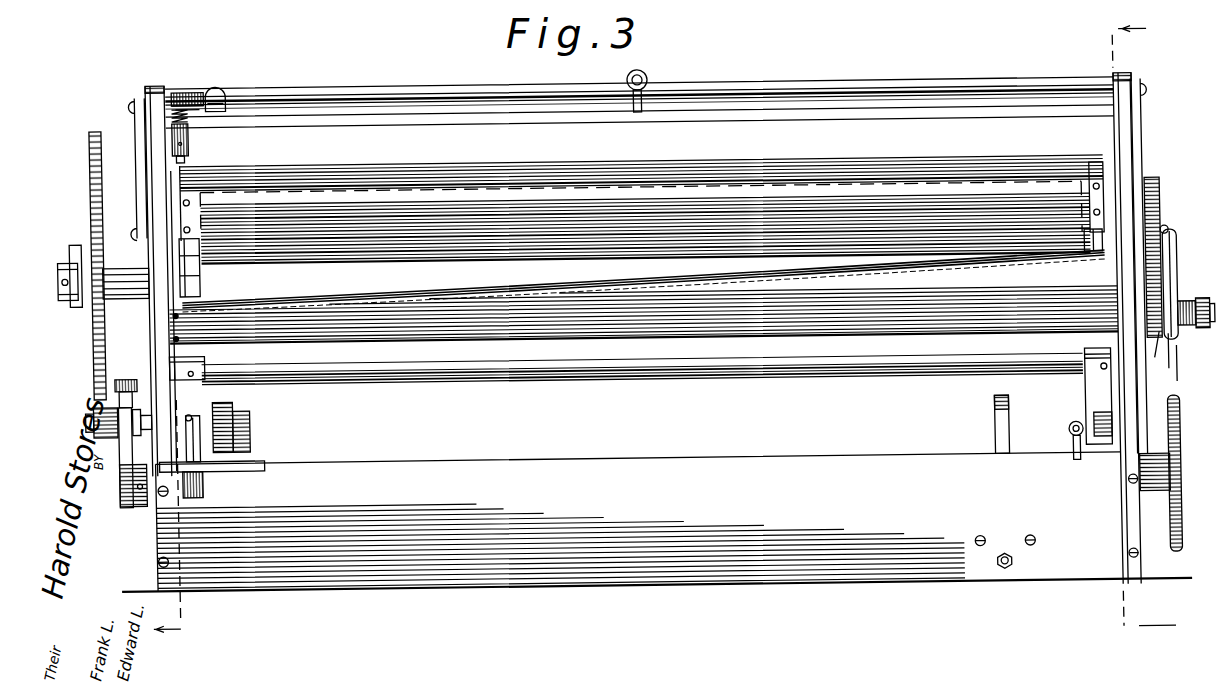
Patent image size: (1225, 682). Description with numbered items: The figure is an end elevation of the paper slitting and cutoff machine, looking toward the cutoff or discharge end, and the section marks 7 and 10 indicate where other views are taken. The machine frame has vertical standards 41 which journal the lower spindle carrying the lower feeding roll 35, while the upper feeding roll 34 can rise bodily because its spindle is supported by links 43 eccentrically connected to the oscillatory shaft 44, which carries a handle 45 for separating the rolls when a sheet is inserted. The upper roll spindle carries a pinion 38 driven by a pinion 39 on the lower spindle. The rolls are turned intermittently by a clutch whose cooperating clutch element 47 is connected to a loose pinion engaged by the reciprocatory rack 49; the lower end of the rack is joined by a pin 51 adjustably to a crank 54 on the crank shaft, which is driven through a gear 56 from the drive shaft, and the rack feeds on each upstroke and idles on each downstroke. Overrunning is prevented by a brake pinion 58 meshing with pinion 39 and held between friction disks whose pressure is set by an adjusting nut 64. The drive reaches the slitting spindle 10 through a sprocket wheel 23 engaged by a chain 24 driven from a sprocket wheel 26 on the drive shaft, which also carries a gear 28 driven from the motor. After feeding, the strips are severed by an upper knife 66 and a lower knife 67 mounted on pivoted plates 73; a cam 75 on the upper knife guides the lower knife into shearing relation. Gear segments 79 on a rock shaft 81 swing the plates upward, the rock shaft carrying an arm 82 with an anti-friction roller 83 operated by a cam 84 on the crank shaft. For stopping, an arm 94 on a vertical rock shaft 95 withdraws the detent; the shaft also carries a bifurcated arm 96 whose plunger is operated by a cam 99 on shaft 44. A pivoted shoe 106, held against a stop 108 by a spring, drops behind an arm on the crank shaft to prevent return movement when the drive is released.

The section line 7- 7 is at (1137, 331).
The spindle 10 is at (198, 397).
The sprocket wheel 23 is at (1179, 266).
The chain 24 is at (1178, 374).
The sprocket wheel 26 is at (1179, 448).
The gear 28 is at (250, 434).
The feeding roll 34 is at (305, 188).
The lower feeding roll 35 is at (645, 236).
The pinion 38 is at (1162, 197).
The pinion 39 is at (1167, 234).
The vertical standards 41 is at (158, 323).
The links 43 is at (144, 121).
The oscillatory shaft 44 is at (783, 92).
The handle 45 is at (653, 80).
The clutch element 47 is at (80, 238).
The reciprocatory rack 49 is at (95, 160).
The pin 51 is at (99, 403).
The crank 54 is at (118, 445).
The gear 56 is at (235, 401).
The pinion 58 is at (1155, 366).
The adjusting nut 64 is at (1191, 305).
The upper knife 66 is at (516, 172).
The lower knife 67 is at (722, 330).
The plates 73 is at (176, 282).
The cam 75 is at (1100, 258).
The gear segments 79 is at (172, 348).
The rock shaft 81 is at (433, 367).
The arm 82 is at (1088, 378).
The anti-friction roller 83 is at (1102, 418).
The cam 84 is at (1095, 464).
The arm 94 is at (222, 455).
The vertical rock shaft 95 is at (197, 156).
The bifurcated arm 96 is at (191, 86).
The cam 99 is at (220, 82).
The shoe 106 is at (1005, 428).
The stop 108 is at (1010, 566).